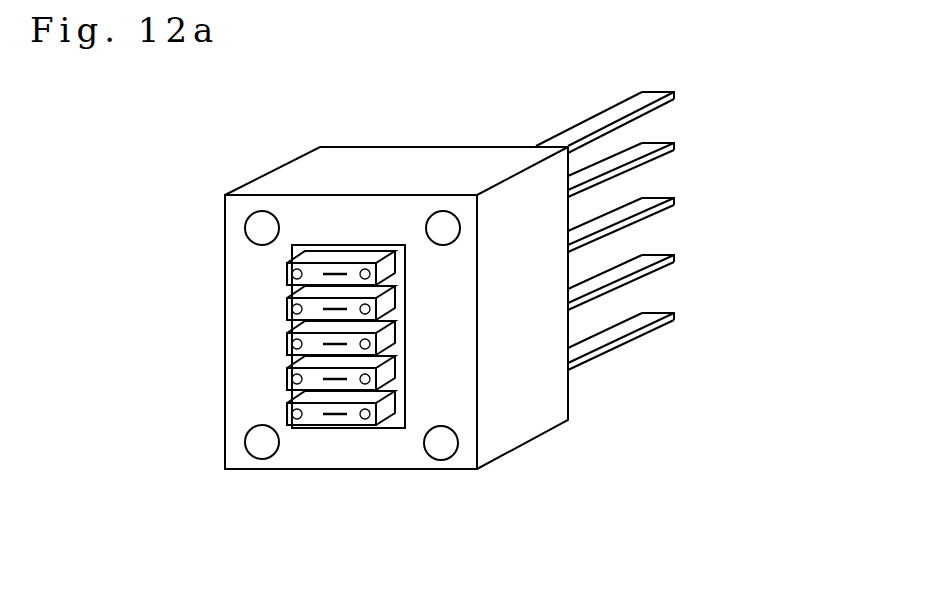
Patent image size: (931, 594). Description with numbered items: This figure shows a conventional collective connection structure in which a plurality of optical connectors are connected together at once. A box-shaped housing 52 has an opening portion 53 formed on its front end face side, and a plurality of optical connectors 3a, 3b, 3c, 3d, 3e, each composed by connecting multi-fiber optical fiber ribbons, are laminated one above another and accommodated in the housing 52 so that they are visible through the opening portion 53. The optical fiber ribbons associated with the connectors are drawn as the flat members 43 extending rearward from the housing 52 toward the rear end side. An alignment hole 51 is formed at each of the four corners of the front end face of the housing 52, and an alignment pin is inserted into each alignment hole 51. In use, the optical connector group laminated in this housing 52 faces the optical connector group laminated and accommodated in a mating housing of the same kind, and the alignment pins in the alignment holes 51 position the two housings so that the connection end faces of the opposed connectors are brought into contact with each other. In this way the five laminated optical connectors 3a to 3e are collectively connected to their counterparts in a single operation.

The optical connector 3a is at (287, 278).
The optical connector 3b is at (287, 310).
The optical connector 3c is at (287, 343).
The optical connector 3d is at (287, 380).
The optical connector 3e is at (287, 413).
The heat radiating fin 43 is at (658, 107).
The alignment hole 51 is at (245, 231).
The box-shaped housing 52 is at (307, 217).
The opening portion 53 is at (343, 245).